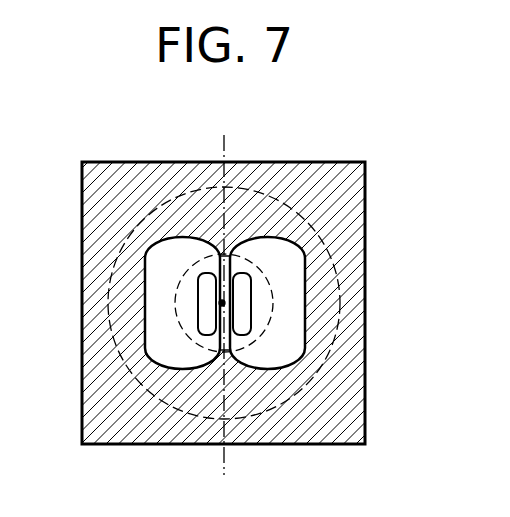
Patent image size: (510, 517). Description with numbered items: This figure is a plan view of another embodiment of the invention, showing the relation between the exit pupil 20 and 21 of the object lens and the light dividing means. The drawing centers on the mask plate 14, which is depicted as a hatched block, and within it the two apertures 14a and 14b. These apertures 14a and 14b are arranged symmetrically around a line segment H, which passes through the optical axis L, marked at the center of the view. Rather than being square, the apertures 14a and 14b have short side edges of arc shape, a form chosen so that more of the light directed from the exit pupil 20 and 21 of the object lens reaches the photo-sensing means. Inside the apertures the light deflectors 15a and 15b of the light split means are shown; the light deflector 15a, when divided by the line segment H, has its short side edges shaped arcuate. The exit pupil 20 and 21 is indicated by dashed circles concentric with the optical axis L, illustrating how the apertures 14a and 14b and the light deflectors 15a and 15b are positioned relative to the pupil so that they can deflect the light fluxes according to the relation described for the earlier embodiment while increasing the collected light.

The mask plate 14 is at (325, 168).
The aperture 14a is at (145, 330).
The aperture 14b is at (303, 327).
The light deflector 15a is at (208, 335).
The light deflector 15b is at (170, 250).
The exit pupil 20 is at (247, 188).
The exit pupil 21 is at (270, 289).
The optical axis L is at (222, 303).
The line segment H is at (226, 460).